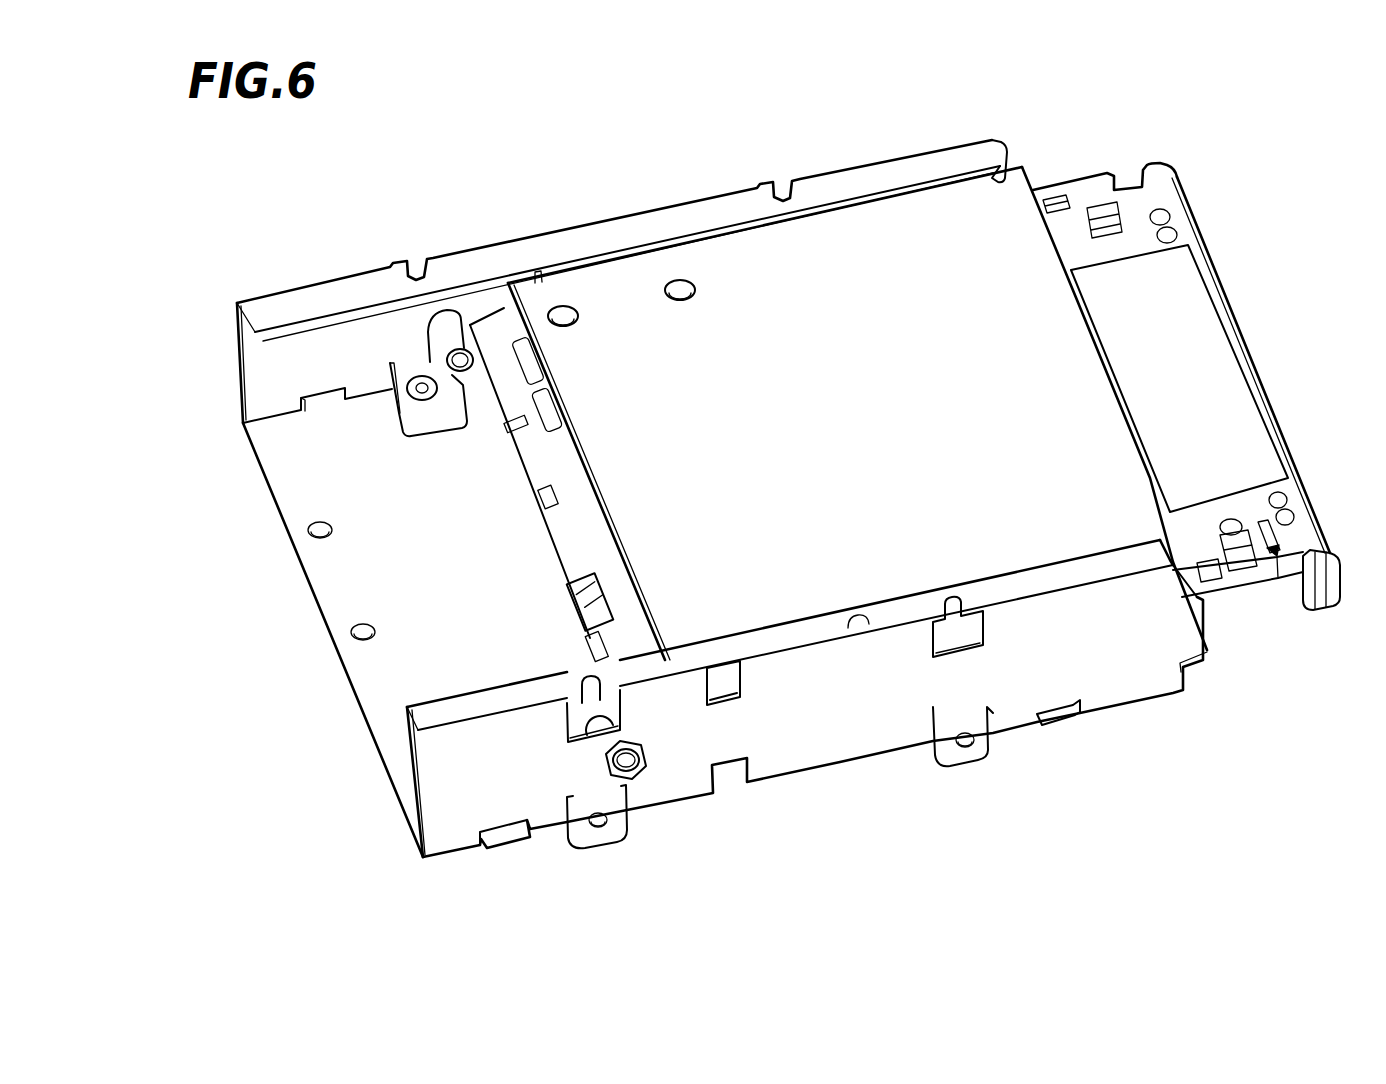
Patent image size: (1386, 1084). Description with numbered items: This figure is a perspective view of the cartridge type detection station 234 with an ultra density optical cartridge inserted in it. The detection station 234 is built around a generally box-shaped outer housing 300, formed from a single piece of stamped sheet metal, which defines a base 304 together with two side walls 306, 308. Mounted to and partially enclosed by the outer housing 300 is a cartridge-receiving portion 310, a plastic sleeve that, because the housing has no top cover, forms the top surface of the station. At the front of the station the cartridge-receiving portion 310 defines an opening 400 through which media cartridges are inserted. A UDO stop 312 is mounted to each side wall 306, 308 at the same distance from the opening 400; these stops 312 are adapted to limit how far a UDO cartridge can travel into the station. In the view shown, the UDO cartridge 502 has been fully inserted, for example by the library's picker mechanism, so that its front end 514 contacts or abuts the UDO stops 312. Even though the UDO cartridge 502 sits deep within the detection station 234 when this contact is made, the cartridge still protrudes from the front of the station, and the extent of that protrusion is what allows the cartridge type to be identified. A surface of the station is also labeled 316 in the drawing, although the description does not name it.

The cartridge type detection station 234 is at (280, 223).
The outer housing 300 is at (679, 831).
The base 304 is at (345, 590).
The side wall 306 is at (268, 368).
The side wall 308 is at (450, 818).
The cartridge-receiving portion 310 is at (909, 233).
The UDO stop 312 is at (452, 328).
The circuit board surface 316 is at (885, 436).
The opening 400 is at (1050, 173).
The UDO cartridge 502 is at (1195, 143).
The front end 514 is at (499, 522).